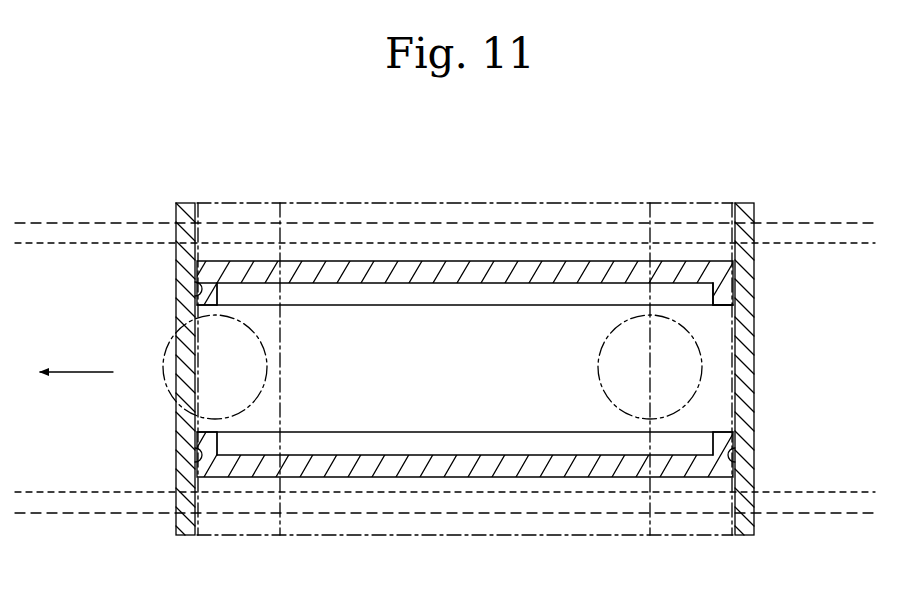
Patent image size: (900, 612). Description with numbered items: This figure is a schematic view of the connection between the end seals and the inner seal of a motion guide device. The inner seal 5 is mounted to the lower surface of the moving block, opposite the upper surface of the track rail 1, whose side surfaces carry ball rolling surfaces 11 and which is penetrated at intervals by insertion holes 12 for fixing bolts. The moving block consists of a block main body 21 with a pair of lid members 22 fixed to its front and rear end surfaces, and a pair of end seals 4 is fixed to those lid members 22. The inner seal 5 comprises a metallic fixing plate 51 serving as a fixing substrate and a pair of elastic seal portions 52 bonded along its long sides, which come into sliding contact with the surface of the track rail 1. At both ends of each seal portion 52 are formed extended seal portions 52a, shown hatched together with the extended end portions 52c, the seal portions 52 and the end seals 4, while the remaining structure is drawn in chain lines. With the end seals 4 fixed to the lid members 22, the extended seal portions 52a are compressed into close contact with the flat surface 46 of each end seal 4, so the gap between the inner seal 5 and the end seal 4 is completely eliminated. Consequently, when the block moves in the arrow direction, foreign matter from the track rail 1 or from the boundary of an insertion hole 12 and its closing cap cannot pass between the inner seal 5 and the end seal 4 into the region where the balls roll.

The track rail 1 is at (796, 220).
The end seal 4 is at (186, 201).
The inner seal 5 is at (709, 307).
The ball rolling surface 11 is at (852, 243).
The insertion hole 12 is at (261, 361).
The block main body 21 is at (440, 203).
The lid member 22 is at (247, 203).
The flat surface 46 is at (195, 290).
The fixing plate 51 is at (533, 320).
The seal portion 52 is at (438, 275).
The extended seal portion 52a is at (216, 203).
The extended end portion 52c is at (218, 297).